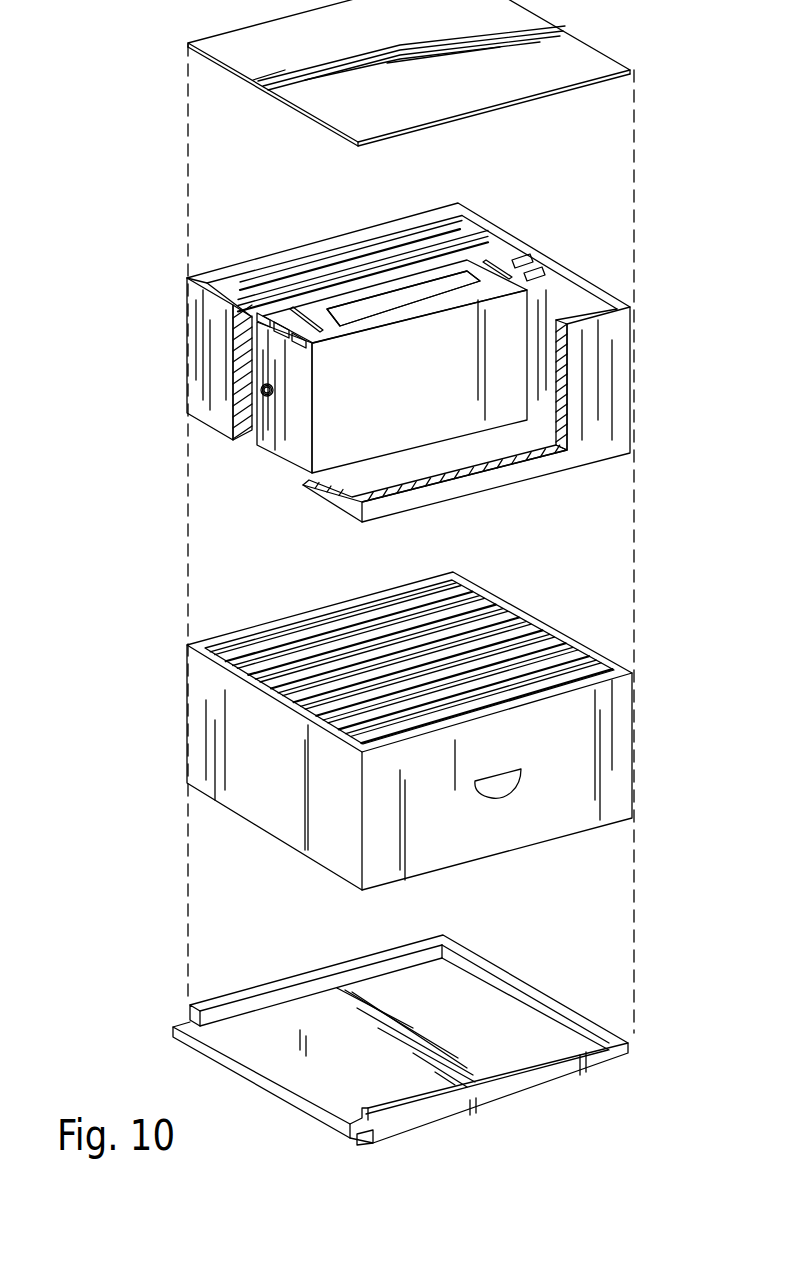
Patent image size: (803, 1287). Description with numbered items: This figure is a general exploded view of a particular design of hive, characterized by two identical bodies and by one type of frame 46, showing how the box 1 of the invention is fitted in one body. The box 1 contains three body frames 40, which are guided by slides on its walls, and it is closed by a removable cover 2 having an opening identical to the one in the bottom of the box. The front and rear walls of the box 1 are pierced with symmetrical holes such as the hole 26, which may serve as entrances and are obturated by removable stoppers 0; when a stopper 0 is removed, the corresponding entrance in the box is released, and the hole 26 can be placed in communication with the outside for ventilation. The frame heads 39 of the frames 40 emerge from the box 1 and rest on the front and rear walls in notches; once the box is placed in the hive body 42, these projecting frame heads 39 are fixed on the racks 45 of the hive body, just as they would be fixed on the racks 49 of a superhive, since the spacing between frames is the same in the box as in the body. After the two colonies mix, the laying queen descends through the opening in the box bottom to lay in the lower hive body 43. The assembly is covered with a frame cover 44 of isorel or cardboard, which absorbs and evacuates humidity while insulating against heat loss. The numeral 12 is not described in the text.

The frame cover 44 is at (532, 98).
The hive body 42 is at (630, 442).
The frame 46 is at (465, 227).
The box 1 is at (428, 358).
The container box 12 is at (428, 410).
The hole 26 is at (275, 395).
The removable stopper 0 is at (275, 392).
The removable cover 2 is at (332, 325).
The frame 40 is at (393, 297).
The frame head 39 is at (525, 260).
The rack 49 is at (543, 280).
The lower hive body 43 is at (436, 731).
The rack 45 is at (538, 645).